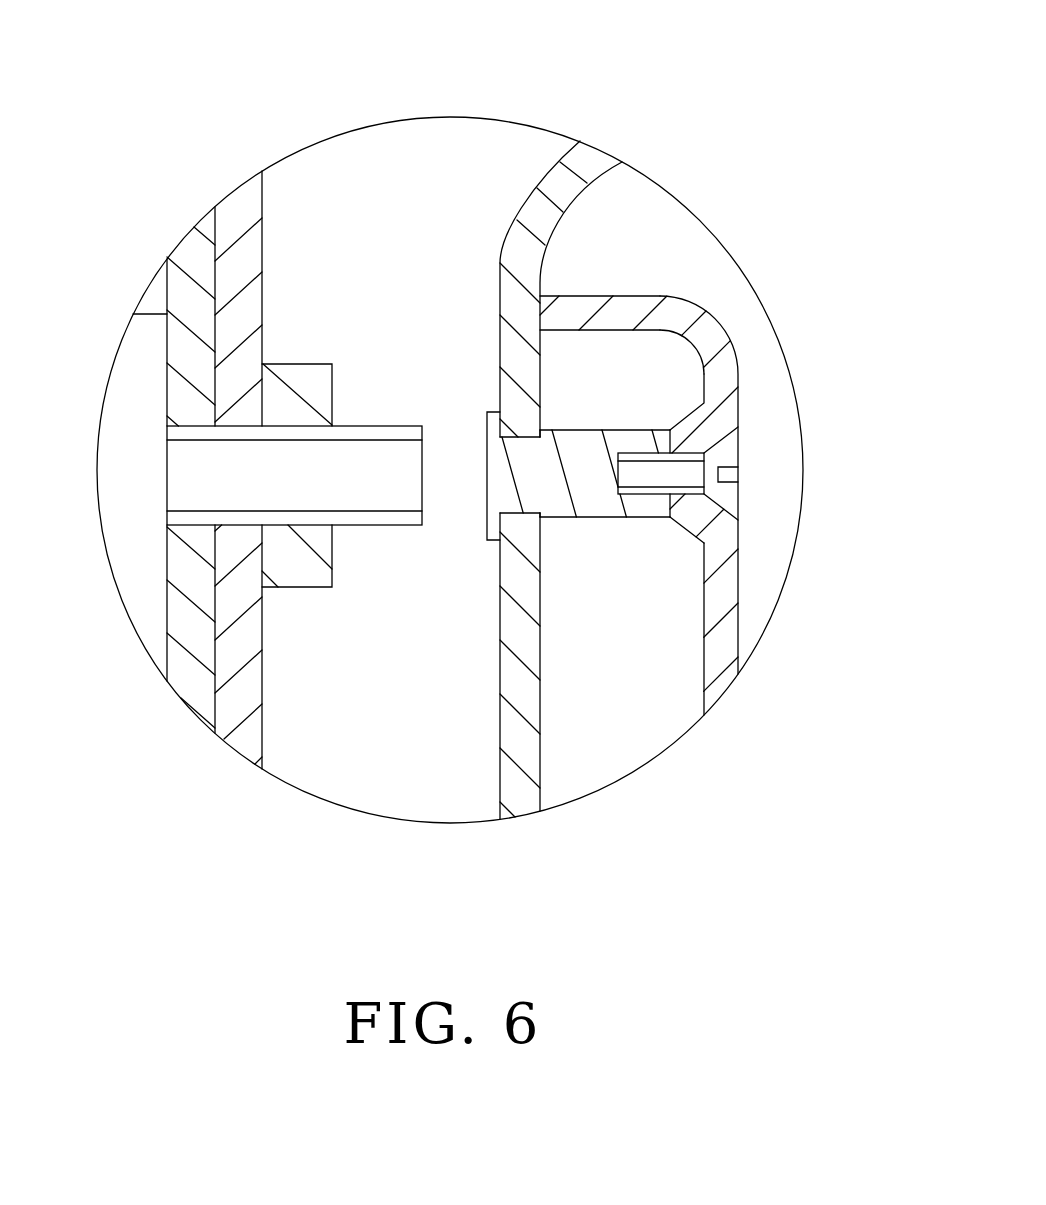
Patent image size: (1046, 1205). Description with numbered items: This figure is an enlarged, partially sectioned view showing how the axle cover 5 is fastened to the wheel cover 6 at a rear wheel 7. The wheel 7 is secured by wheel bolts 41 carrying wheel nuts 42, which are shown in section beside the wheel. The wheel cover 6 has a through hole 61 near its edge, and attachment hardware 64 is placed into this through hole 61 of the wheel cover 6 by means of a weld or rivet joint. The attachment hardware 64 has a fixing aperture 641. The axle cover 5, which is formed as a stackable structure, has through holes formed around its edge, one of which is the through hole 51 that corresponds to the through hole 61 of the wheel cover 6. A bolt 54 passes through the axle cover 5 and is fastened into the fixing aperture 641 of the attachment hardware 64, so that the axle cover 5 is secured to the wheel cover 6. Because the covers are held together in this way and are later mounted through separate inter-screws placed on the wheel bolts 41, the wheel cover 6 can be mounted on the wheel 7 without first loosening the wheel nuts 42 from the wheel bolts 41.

The wheel 7 is at (238, 210).
The wheel bolt 41 is at (238, 486).
The wheel nut 42 is at (300, 568).
The wheel cover 6 is at (522, 735).
The through hole 61 is at (508, 513).
The attachment hardware 64 is at (574, 445).
The fixing aperture 641 is at (633, 453).
The axle cover 5 is at (727, 583).
The through hole 51 is at (677, 453).
The bolt 54 is at (730, 453).